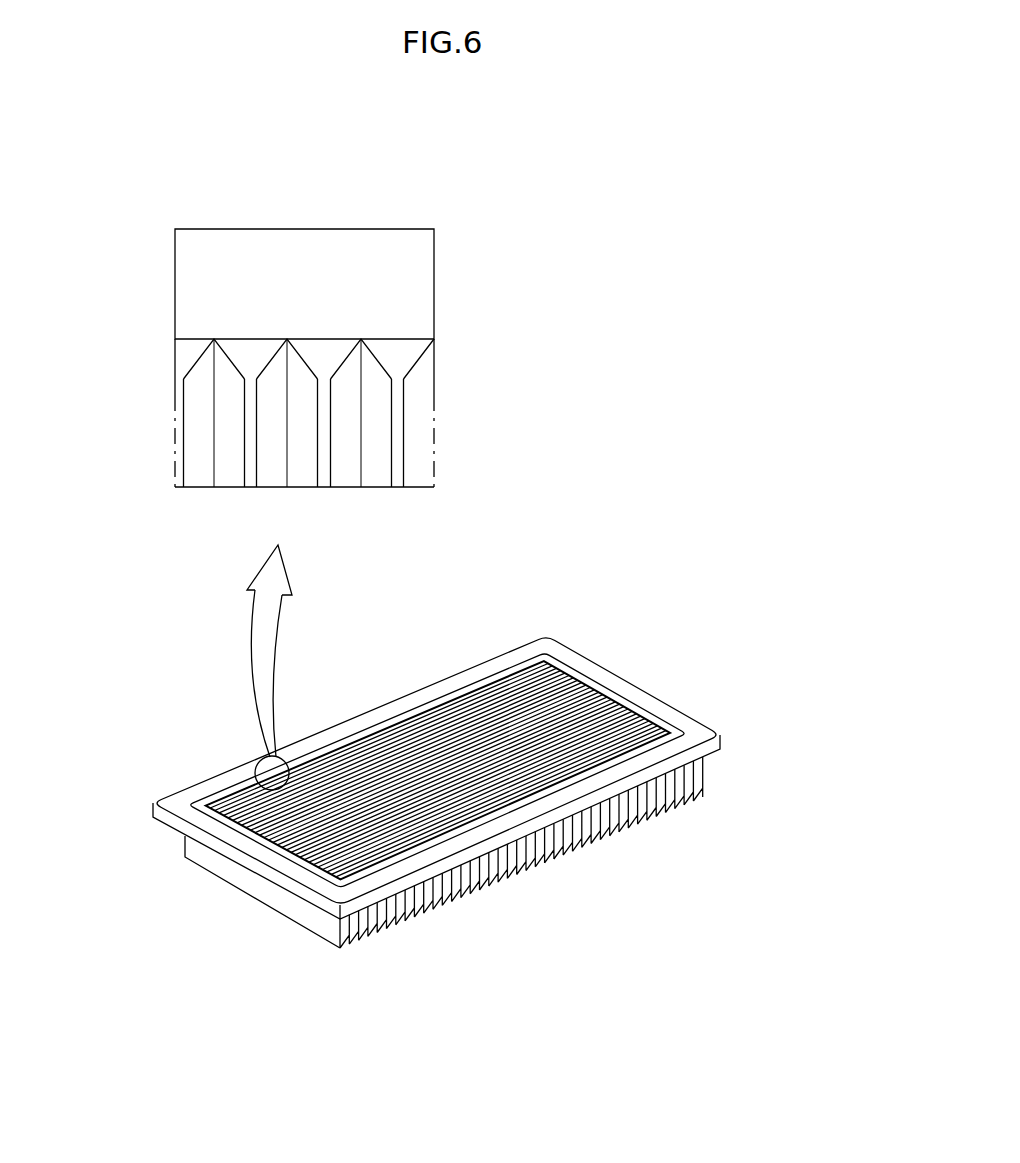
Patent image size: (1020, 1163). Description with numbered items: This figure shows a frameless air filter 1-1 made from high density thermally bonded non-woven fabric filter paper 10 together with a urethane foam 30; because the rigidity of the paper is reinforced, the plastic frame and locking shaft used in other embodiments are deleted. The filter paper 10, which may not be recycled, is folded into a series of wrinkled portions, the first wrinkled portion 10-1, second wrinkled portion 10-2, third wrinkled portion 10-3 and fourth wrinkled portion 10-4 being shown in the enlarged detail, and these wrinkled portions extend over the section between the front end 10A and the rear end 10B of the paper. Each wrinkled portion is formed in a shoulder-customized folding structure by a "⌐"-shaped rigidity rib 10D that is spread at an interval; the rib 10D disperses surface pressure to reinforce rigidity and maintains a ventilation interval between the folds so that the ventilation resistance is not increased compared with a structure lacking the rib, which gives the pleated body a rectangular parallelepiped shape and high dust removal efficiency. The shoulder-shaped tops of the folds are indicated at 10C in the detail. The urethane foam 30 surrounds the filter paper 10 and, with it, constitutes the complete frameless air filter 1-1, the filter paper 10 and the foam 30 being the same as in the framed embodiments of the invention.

The frameless air filter 1-1 is at (587, 615).
The thermally bonded non-woven fabric filter paper 10 is at (500, 692).
The front end 10A is at (228, 872).
The rear end 10B is at (707, 773).
The pleat tops 10C is at (235, 367).
The rigidity rib 10D is at (250, 392).
The first wrinkled portion 10-1 is at (178, 452).
The second wrinkled portion 10-2 is at (228, 462).
The third wrinkled portion 10-3 is at (298, 465).
The fourth wrinkled portion 10-4 is at (380, 452).
The urethane foam 30 is at (417, 290).